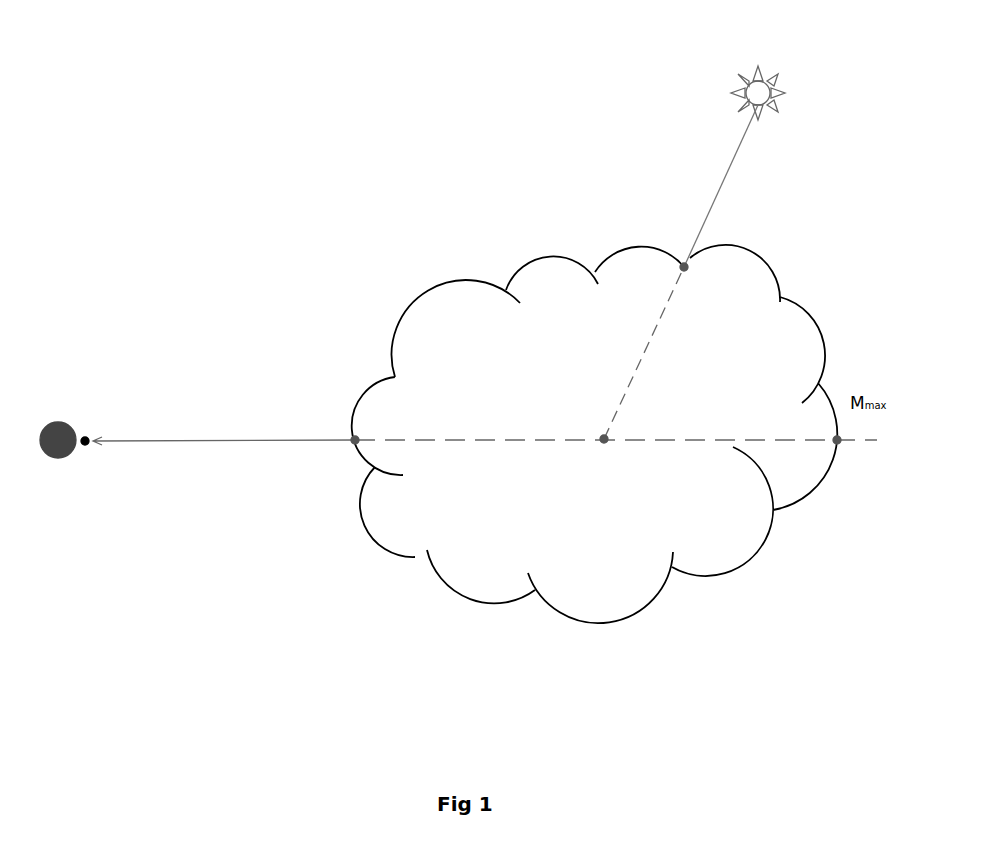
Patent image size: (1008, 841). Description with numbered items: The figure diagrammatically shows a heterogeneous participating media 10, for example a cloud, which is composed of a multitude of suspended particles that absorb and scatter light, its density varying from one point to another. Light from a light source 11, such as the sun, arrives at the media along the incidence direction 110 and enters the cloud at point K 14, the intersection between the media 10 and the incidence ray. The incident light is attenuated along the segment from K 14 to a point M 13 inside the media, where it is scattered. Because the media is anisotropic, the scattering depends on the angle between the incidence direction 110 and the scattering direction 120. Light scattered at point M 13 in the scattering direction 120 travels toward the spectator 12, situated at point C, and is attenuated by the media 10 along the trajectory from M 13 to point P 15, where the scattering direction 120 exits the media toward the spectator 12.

The heterogeneous participating media 10 is at (660, 593).
The light source 11 is at (740, 92).
The incidence direction ωin 110 is at (708, 213).
The spectator 12 is at (68, 453).
The scattering direction ωout 120 is at (212, 442).
The point M 13 is at (607, 445).
The point K 14 is at (687, 268).
The point P 15 is at (357, 438).